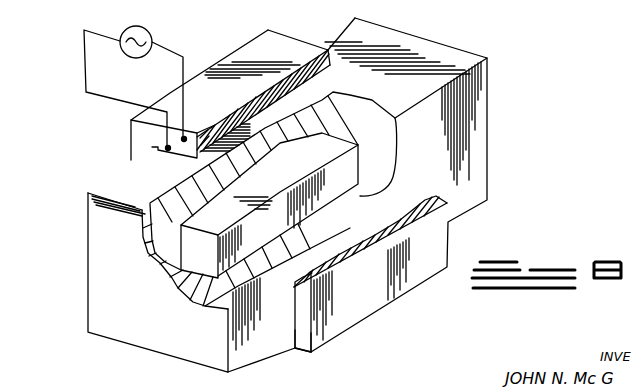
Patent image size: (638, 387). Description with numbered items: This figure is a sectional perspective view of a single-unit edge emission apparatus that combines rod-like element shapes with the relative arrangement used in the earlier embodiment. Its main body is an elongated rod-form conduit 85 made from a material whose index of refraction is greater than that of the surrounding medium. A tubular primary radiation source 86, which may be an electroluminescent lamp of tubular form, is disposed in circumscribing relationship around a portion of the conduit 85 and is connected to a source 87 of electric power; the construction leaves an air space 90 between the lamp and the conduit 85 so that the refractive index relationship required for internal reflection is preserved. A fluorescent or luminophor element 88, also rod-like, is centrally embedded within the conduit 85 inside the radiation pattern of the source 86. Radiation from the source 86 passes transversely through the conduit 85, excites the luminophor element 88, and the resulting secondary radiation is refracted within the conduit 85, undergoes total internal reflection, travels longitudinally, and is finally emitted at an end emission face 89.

The elongated rod-form conduit 85 is at (478, 145).
The tubular primary radiation source 86 is at (249, 50).
The source of electric power 87 is at (148, 28).
The luminophor element 88 is at (350, 169).
The end emission face 89 is at (100, 287).
The air space 90 is at (292, 332).